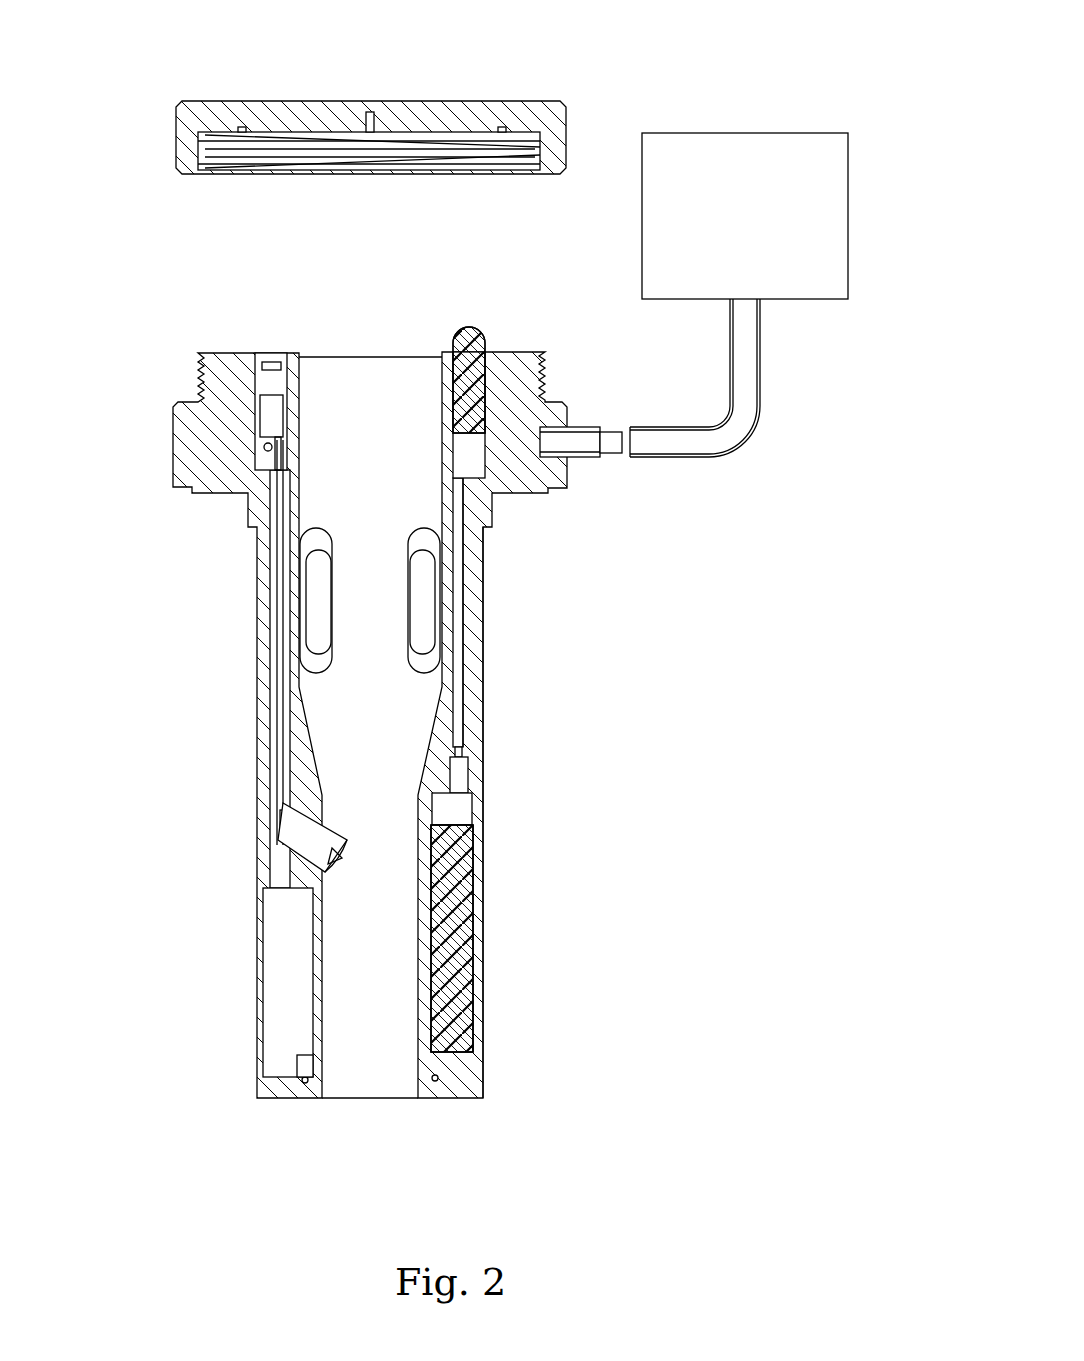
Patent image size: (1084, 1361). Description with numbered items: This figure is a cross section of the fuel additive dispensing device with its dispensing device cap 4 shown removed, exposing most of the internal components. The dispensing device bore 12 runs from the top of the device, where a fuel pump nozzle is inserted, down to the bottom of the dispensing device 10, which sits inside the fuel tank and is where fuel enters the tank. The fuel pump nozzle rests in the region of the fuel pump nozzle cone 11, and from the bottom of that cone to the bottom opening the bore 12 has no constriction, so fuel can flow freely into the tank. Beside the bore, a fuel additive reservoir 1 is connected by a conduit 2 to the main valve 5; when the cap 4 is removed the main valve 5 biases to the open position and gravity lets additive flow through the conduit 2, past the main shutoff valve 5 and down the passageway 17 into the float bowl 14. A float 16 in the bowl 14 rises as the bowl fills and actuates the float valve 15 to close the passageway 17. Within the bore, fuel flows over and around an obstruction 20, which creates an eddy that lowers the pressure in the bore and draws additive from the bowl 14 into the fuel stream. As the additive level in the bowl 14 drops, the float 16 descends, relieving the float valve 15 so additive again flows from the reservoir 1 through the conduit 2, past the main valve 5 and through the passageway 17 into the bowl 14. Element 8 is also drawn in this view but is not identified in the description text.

The fuel additive reservoir 1 is at (772, 208).
The conduit 2 is at (722, 443).
The dispensing device cap 4 is at (400, 117).
The main valve 5 is at (470, 330).
The piston element 8 is at (272, 383).
The bottom of the dispensing device 10 is at (110, 548).
The fuel pump nozzle cone 11 is at (320, 765).
The dispensing device bore 12 is at (383, 375).
The float bowl 14 is at (293, 982).
The float valve 15 is at (460, 772).
The float 16 is at (452, 928).
The passageway 17 is at (458, 613).
The obstruction 20 is at (305, 830).